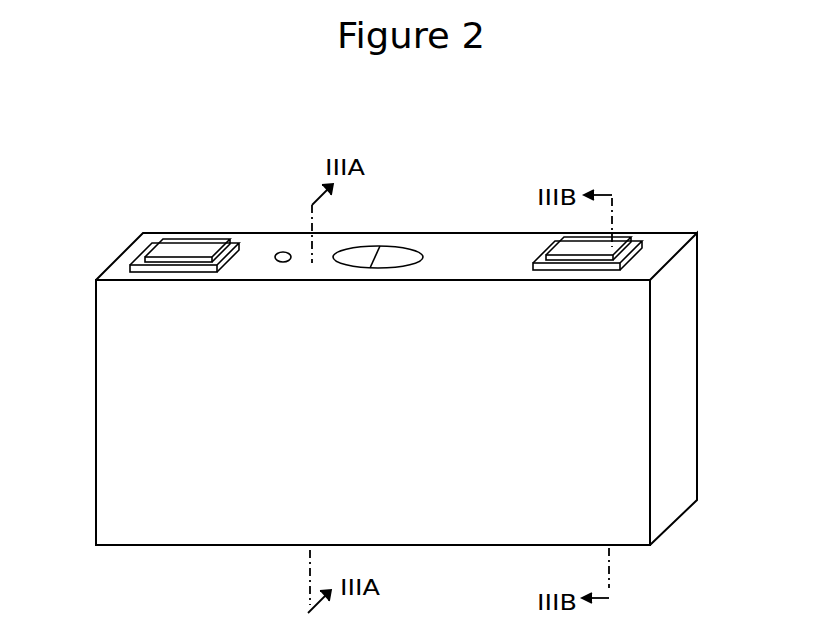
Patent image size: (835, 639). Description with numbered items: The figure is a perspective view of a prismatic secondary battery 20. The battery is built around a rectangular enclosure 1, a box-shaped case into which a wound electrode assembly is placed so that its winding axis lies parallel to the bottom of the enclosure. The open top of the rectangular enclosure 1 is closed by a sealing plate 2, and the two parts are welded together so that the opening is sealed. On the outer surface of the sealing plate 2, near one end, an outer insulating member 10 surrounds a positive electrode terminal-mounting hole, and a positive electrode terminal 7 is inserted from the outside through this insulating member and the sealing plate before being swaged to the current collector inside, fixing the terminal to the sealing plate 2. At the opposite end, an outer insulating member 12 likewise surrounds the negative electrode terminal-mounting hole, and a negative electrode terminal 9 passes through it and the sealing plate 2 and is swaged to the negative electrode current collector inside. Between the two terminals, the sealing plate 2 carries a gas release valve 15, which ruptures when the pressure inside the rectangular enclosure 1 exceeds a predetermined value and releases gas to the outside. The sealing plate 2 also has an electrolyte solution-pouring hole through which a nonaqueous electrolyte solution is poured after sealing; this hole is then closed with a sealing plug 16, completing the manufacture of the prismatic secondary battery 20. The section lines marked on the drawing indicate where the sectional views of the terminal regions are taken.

The prismatic secondary battery 20 is at (48, 119).
The rectangular enclosure 1 is at (568, 447).
The sealing plate 2 is at (475, 260).
The positive electrode terminal 7 is at (189, 245).
The negative electrode terminal 9 is at (619, 242).
The outer insulating member 10 is at (145, 262).
The outer insulating member 12 is at (644, 246).
The gas release valve 15 is at (400, 257).
The sealing plug 16 is at (282, 253).